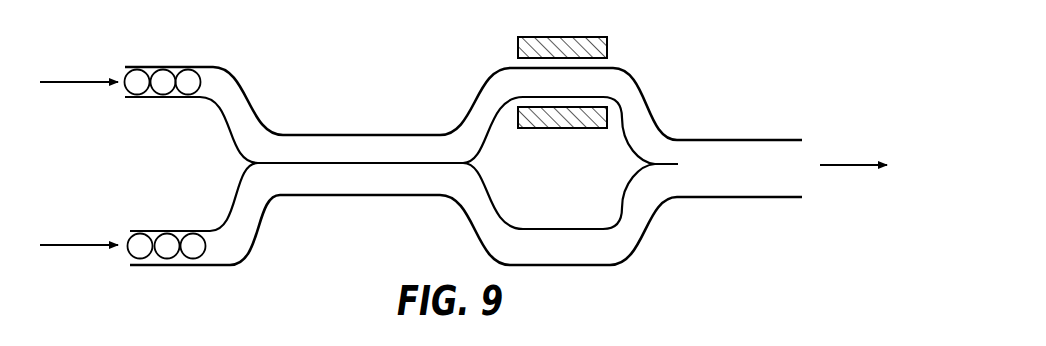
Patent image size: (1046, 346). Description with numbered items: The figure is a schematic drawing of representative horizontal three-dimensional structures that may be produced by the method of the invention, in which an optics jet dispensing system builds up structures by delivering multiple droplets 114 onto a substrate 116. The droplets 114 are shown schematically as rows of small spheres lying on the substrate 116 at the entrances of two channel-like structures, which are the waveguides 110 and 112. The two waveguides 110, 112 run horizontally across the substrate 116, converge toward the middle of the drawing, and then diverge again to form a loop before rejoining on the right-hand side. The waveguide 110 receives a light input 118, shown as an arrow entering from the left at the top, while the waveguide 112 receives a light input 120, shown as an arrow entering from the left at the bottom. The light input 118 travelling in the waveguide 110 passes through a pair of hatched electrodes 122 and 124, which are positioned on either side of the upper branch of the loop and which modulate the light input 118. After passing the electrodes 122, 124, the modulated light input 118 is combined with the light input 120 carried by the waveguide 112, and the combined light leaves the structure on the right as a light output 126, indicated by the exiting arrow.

The waveguide 110 is at (362, 135).
The waveguide 112 is at (378, 197).
The droplets 114 is at (150, 97).
The substrate 116 is at (227, 40).
The light input 118 is at (80, 82).
The light input 120 is at (62, 245).
The electrode 122 is at (607, 45).
The electrode 124 is at (563, 128).
The light output 126 is at (849, 165).